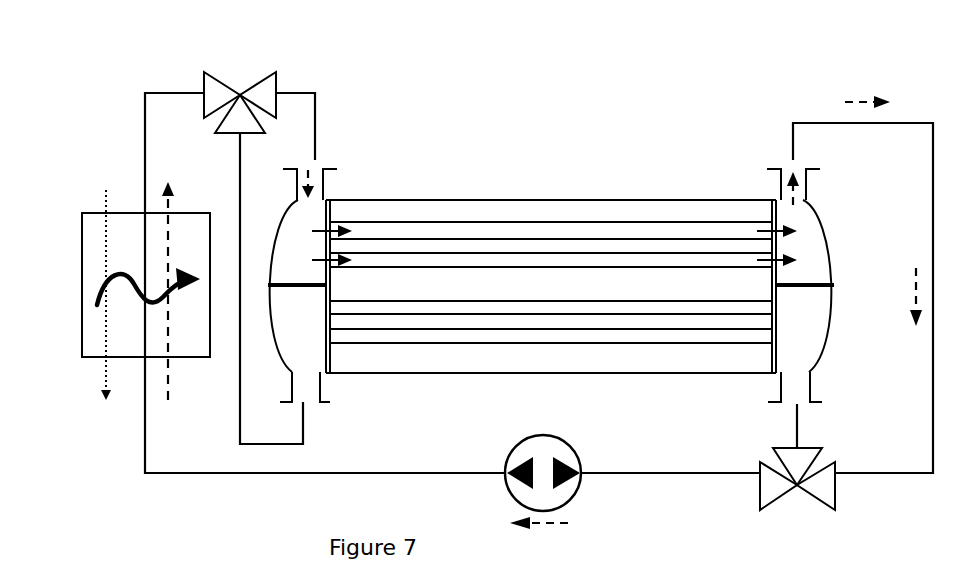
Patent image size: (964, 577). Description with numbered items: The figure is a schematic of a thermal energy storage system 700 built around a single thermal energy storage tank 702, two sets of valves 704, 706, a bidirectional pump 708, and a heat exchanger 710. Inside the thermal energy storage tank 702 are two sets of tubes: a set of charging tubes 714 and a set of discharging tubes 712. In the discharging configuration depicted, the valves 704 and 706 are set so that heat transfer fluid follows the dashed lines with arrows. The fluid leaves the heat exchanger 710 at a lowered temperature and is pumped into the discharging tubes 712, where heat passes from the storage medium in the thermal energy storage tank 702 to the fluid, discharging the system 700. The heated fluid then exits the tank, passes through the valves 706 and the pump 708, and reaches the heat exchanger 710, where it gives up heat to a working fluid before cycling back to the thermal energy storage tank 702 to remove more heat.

The thermal energy storage system 700 is at (112, 81).
The thermal energy storage tank 702 is at (500, 200).
The valves 704 is at (238, 72).
The valves 706 is at (798, 506).
The bidirectional pump 708 is at (545, 437).
The heat exchanger 710 is at (82, 283).
The discharging tubes 712 is at (613, 258).
The charging tubes 714 is at (617, 337).